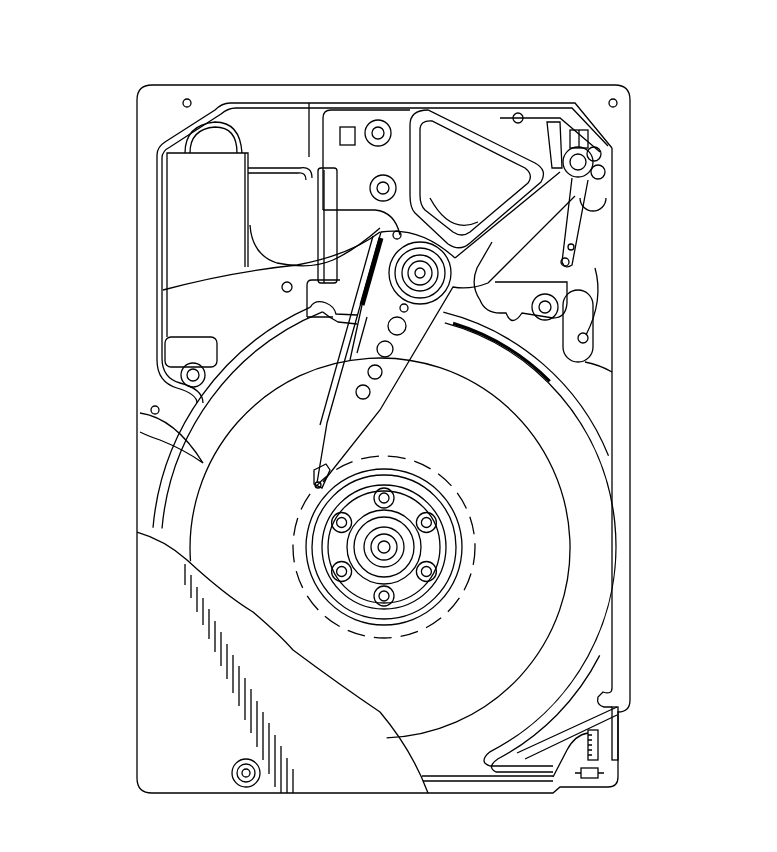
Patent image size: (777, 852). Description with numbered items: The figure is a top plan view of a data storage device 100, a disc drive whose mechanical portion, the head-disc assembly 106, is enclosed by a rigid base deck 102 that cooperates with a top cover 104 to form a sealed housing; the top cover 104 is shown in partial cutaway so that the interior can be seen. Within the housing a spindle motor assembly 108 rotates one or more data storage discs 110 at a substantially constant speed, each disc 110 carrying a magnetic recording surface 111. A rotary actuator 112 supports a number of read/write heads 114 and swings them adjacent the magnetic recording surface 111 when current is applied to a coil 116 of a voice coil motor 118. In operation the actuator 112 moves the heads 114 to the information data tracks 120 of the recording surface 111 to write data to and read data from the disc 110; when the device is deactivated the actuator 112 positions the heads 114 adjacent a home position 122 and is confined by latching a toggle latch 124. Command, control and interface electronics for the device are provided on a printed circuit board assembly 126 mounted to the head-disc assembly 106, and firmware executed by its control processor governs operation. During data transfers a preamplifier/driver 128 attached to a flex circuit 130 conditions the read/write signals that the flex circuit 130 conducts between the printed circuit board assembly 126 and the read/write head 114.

The data storage device 100 is at (206, 58).
The base deck 102 is at (150, 213).
The top cover 104 is at (173, 635).
The head-disc assembly 106 is at (641, 473).
The spindle motor assembly 108 is at (396, 528).
The data storage disc 110 is at (505, 565).
The magnetic recording surface 111 is at (520, 606).
The rotary actuator 112 is at (392, 406).
The read/write head 114 is at (320, 478).
The coil 116 is at (467, 124).
The voice coil motor 118 is at (504, 100).
The information data tracks 120 is at (150, 420).
The home position 122 is at (443, 612).
The toggle latch 124 is at (613, 136).
The printed circuit board assembly 126 is at (128, 440).
The preamplifier/driver 128 is at (163, 290).
The flex circuit 130 is at (250, 225).